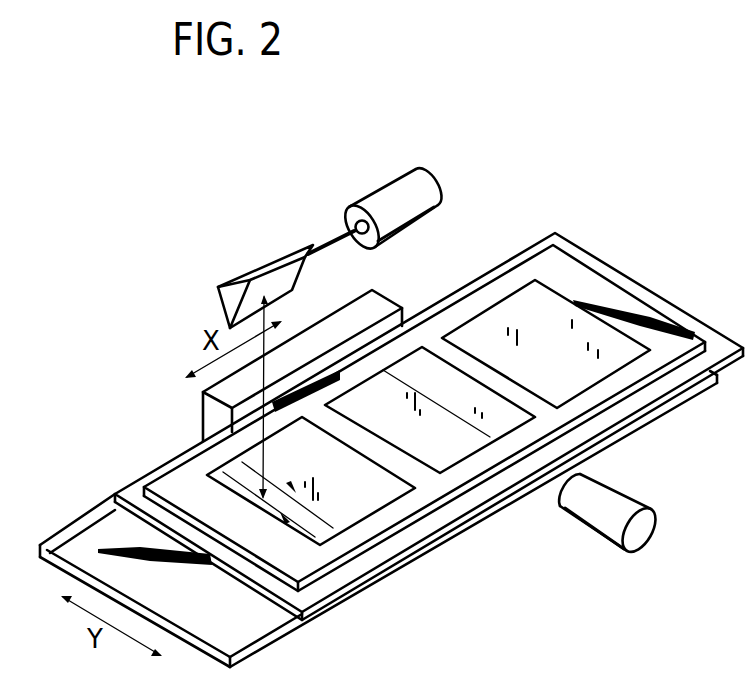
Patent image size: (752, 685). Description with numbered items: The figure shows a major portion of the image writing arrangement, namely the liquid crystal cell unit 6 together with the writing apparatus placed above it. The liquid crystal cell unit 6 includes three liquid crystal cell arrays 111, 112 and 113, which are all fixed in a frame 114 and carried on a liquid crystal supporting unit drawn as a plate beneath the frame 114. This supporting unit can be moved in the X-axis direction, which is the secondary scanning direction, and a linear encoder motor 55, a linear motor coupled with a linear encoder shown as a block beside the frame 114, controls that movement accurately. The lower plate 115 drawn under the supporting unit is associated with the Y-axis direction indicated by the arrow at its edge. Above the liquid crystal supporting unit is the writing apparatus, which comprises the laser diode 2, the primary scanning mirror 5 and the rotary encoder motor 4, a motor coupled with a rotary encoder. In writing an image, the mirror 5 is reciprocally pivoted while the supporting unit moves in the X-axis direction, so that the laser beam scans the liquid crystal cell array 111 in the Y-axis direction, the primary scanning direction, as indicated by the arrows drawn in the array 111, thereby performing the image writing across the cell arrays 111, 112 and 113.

The laser diode 2 is at (609, 493).
The rotary encoder motor 4 is at (420, 190).
The primary scanning mirror 5 is at (268, 263).
The liquid crystal cell unit 6 is at (592, 223).
The linear encoder motor 55 is at (227, 393).
The liquid crystal cell array 111 is at (362, 510).
The liquid crystal cell array 112 is at (414, 360).
The liquid crystal cell array 113 is at (518, 307).
The frame 114 is at (617, 293).
The lower stage plate 115 is at (110, 547).